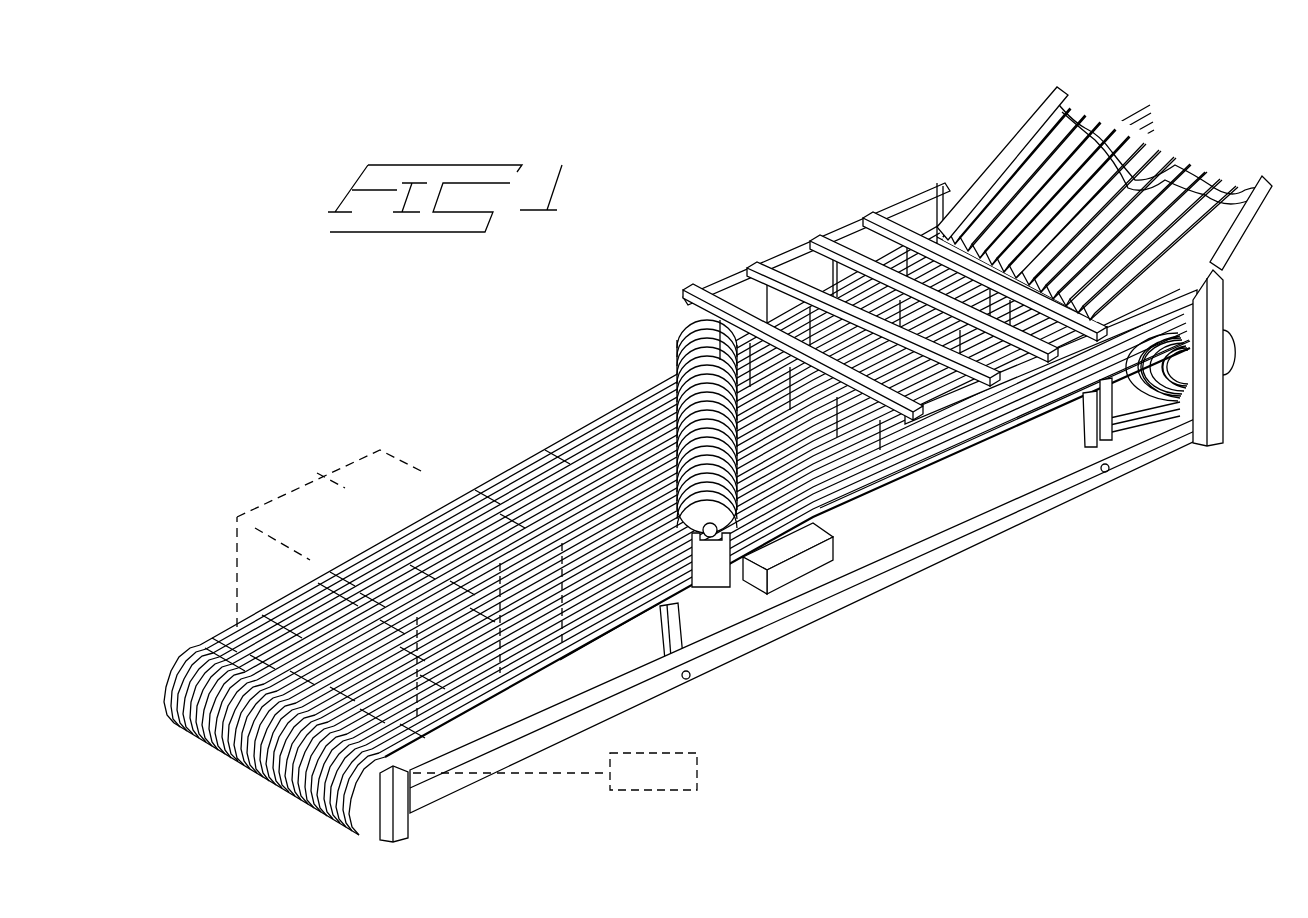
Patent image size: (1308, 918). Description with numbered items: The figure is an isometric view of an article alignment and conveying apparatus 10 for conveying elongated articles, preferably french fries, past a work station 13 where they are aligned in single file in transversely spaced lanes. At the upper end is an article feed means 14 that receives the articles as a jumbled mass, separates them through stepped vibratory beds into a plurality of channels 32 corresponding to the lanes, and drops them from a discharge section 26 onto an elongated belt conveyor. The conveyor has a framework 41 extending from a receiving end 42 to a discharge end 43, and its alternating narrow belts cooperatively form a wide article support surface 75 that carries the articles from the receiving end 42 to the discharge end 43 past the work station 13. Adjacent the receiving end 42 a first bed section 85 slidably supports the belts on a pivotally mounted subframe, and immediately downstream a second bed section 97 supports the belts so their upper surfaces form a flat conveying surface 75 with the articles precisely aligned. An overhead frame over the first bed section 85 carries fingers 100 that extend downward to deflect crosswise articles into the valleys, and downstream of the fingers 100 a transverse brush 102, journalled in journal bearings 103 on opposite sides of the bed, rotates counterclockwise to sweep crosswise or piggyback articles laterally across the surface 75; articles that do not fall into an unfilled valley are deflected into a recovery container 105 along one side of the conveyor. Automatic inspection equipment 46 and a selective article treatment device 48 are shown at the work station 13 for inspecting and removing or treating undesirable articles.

The article alignment and conveying apparatus 10 is at (722, 462).
The work station 13 is at (518, 668).
The article feed means 14 is at (1104, 195).
The discharge section 26 is at (940, 296).
The channels 32 is at (1118, 186).
The framework 41 is at (858, 589).
The receiving end 42 is at (1237, 356).
The discharge end 43 is at (355, 820).
The automatic inspection equipment 46 is at (421, 476).
The selective article treatment device 48 is at (237, 555).
The article support surface 75 is at (571, 444).
The first bed section 85 is at (990, 434).
The second bed section 97 is at (596, 640).
The fingers 100 is at (770, 294).
The transverse brush 102 is at (678, 348).
The journal bearings 103 is at (716, 548).
The recovery container 105 is at (832, 548).